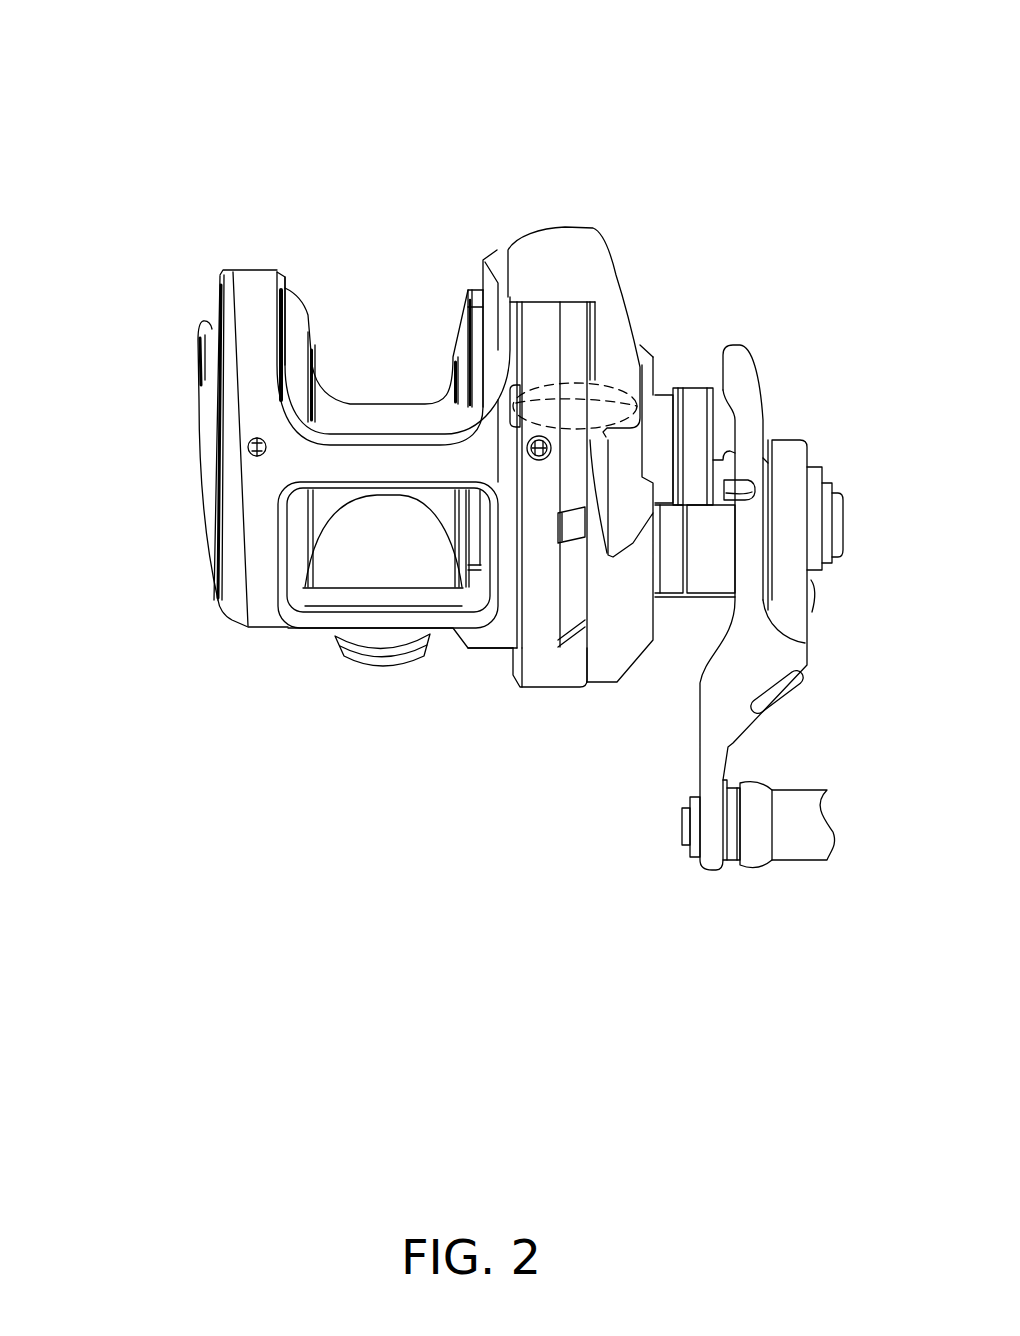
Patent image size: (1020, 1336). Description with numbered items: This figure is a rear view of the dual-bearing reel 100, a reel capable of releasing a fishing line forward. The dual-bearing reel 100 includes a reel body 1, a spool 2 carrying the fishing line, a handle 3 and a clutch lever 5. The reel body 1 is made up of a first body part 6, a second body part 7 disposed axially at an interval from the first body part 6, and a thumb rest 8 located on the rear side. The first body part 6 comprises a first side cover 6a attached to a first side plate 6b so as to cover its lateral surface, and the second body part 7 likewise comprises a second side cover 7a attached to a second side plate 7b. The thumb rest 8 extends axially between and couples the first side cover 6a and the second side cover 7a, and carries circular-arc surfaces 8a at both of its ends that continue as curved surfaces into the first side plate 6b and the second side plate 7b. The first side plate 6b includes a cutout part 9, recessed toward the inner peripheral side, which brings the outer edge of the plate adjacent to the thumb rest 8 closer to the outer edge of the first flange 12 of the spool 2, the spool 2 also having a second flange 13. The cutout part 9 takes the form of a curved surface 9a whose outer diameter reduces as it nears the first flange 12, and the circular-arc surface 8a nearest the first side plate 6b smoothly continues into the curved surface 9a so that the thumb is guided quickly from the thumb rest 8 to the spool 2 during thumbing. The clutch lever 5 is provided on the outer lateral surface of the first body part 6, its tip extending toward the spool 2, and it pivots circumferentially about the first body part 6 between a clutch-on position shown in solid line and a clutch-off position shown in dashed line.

The dual-bearing reel 100 is at (692, 110).
The reel body 1 is at (237, 183).
The spool 2 is at (399, 500).
The handle 3 is at (808, 858).
The clutch lever 5 is at (593, 260).
The first body part 6 is at (517, 702).
The first side cover 6a is at (543, 648).
The first side plate 6b is at (493, 647).
The second body part 7 is at (240, 647).
The second side cover 7a is at (200, 508).
The second side plate 7b is at (242, 260).
The thumb rest 8 is at (362, 468).
The circular-arc surfaces 8a is at (320, 440).
The cutout part 9 is at (493, 300).
The curved surface 9a is at (493, 375).
The first flange 12 is at (450, 285).
The second flange 13 is at (318, 282).